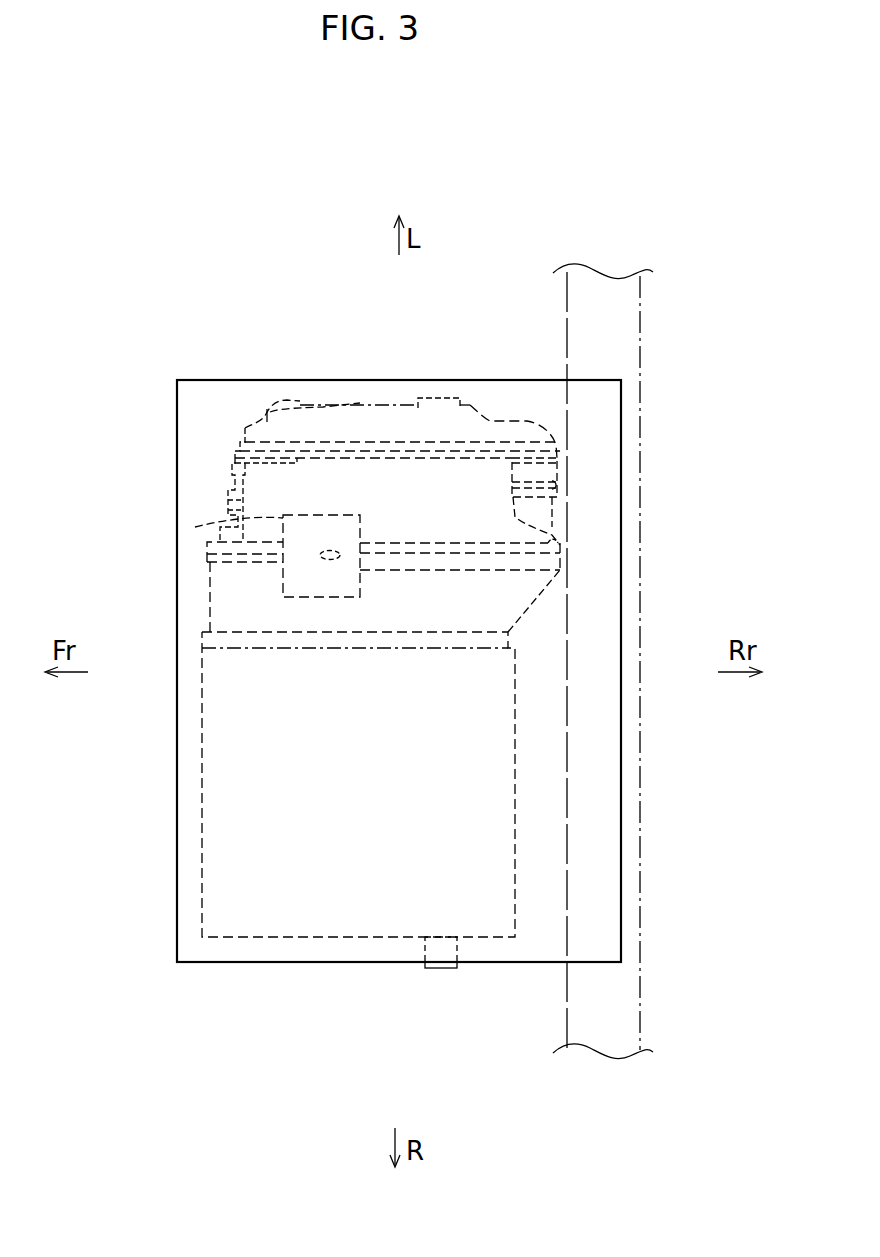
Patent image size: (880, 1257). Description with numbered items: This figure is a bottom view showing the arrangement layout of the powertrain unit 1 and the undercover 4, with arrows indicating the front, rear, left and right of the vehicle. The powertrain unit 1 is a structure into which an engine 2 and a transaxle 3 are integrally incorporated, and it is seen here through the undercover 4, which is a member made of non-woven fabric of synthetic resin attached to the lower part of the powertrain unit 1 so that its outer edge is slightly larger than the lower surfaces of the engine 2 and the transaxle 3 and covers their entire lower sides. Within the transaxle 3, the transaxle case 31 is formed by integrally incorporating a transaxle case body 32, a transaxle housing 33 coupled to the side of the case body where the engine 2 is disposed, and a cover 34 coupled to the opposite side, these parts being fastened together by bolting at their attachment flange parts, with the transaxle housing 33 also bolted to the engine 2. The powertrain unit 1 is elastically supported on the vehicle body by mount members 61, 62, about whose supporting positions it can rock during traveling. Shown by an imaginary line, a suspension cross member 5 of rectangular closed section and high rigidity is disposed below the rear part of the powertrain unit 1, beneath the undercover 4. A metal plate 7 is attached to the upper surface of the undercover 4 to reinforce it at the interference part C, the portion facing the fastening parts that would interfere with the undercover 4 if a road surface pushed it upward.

The powertrain unit 1 is at (236, 425).
The engine 2 is at (200, 858).
The transaxle 3 is at (490, 418).
The undercover 4 is at (276, 378).
The suspension cross member 5 is at (640, 758).
The metal plate 7 is at (195, 527).
The transaxle case 31 is at (228, 470).
The transaxle case body 32 is at (513, 497).
The transaxle housing 33 is at (232, 601).
The cover 34 is at (360, 410).
The mount member 61 is at (447, 398).
The mount member 62 is at (441, 968).
The interference part C is at (340, 548).